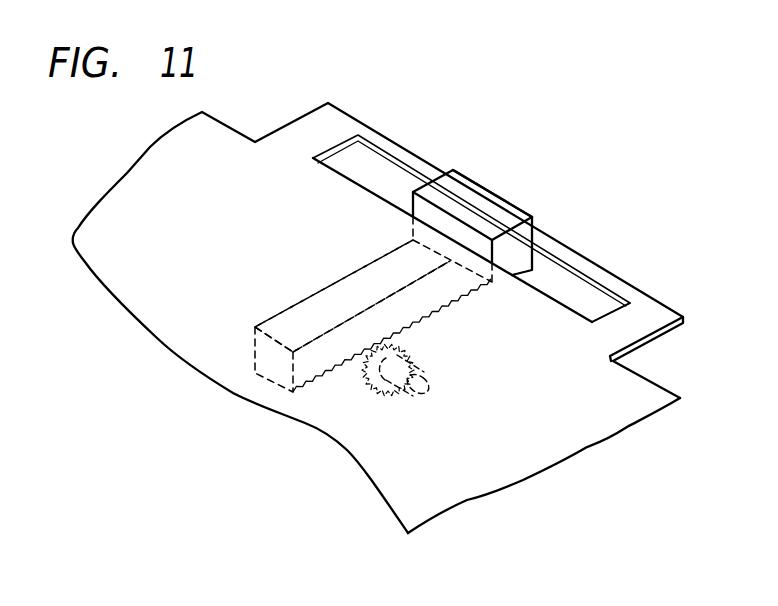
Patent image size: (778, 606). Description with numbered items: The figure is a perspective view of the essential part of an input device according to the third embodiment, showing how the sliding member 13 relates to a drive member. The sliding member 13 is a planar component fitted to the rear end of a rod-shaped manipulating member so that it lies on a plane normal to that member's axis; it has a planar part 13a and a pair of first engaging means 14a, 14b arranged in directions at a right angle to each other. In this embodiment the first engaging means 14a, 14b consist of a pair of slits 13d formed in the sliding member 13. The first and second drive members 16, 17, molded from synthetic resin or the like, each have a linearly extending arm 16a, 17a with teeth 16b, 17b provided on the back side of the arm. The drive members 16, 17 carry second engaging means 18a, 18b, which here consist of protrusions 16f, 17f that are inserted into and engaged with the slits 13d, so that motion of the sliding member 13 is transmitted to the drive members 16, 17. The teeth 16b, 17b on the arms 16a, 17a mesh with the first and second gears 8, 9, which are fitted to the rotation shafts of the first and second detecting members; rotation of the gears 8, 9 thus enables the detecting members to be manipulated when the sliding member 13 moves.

The sliding member 13 is at (158, 337).
The planar part 13a is at (528, 463).
The slits 13d is at (599, 292).
The first engaging means 14a is at (486, 224).
The first engaging means 14b is at (568, 285).
The first drive member 16 is at (305, 392).
The second drive member 17 is at (263, 376).
The arm 16a is at (323, 296).
The arm 17a is at (300, 312).
The teeth 16b is at (338, 423).
The teeth 17b is at (313, 383).
The protrusion 16f is at (472, 171).
The protrusion 17f is at (457, 182).
The second engaging means 18a is at (519, 154).
The second engaging means 18b is at (490, 188).
The first gear 8 is at (379, 450).
The second gear 9 is at (366, 392).